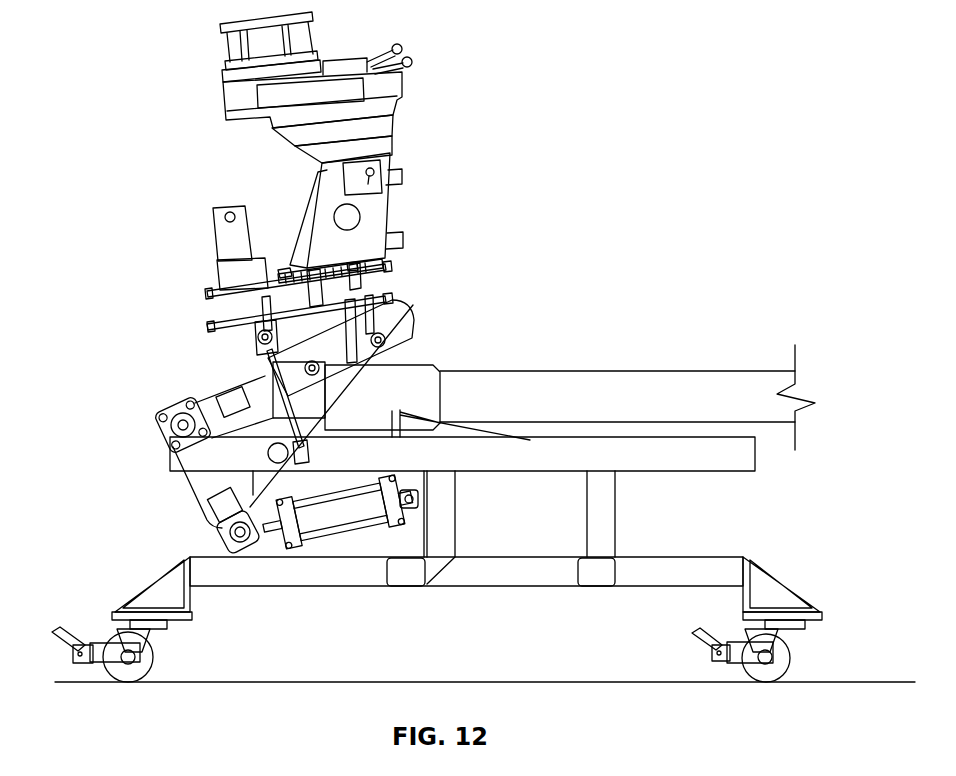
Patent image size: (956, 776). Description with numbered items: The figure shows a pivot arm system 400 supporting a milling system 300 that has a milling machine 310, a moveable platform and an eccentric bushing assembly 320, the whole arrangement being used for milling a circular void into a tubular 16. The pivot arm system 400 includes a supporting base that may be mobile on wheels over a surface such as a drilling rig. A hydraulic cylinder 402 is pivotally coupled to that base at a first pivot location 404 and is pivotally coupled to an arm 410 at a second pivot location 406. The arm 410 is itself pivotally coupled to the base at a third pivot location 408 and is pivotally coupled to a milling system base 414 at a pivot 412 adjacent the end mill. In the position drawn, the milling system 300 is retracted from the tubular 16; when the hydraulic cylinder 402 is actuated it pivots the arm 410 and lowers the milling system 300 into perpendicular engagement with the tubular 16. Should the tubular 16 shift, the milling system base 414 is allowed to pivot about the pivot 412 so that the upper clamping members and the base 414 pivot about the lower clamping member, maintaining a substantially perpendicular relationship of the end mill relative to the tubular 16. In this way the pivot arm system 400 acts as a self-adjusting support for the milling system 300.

The tubular 16 is at (630, 391).
The milling system 300 is at (423, 94).
The milling machine 310 is at (240, 98).
The eccentric bushing assembly 320 is at (287, 265).
The pivot arm system 400 is at (175, 390).
The hydraulic cylinder 402 is at (337, 517).
The pivot coupling of hydraulic cylinder to base 404 is at (418, 505).
The pivot coupling of hydraulic cylinder to arm 406 is at (240, 540).
The pivot coupling of arm to base 408 is at (168, 434).
The arm 410 is at (262, 391).
The pivot 412 is at (316, 332).
The milling system base 414 is at (384, 289).